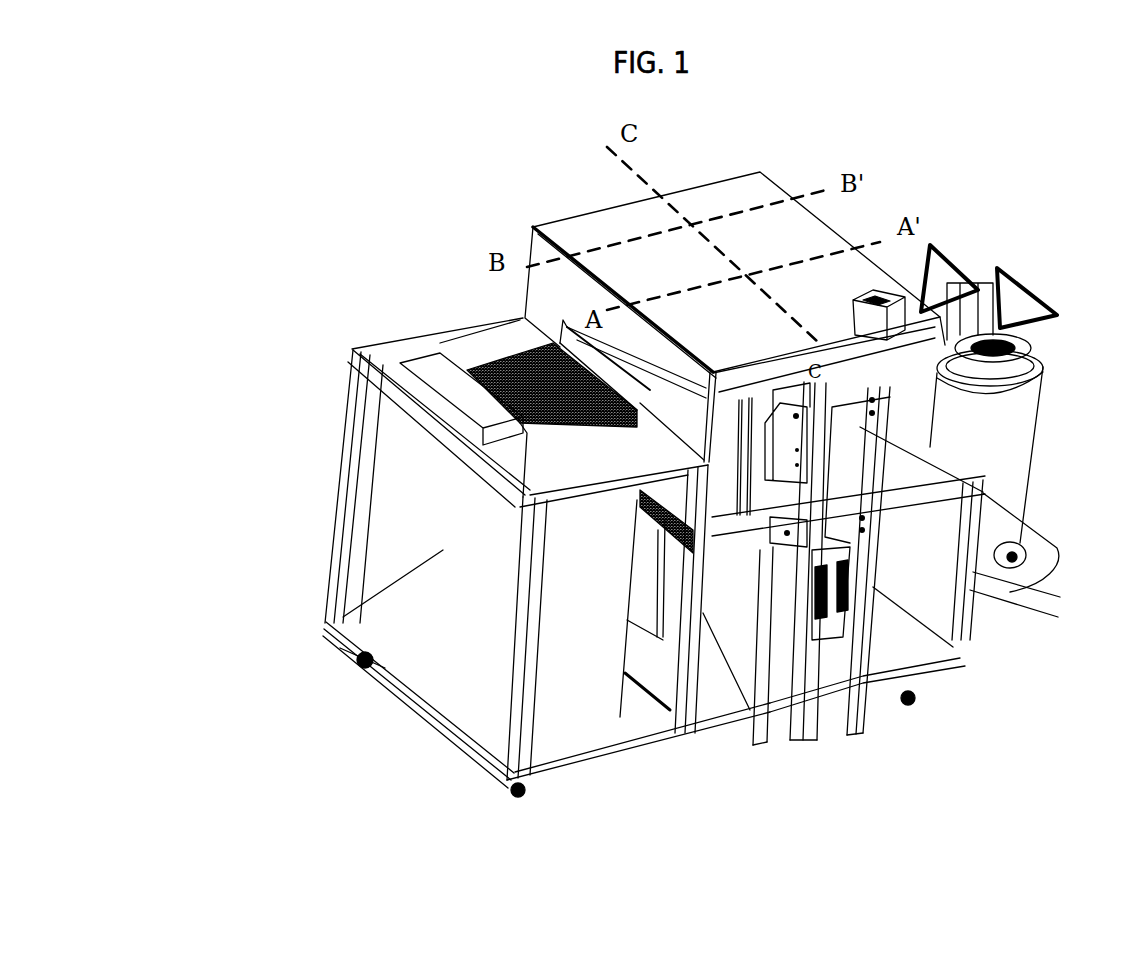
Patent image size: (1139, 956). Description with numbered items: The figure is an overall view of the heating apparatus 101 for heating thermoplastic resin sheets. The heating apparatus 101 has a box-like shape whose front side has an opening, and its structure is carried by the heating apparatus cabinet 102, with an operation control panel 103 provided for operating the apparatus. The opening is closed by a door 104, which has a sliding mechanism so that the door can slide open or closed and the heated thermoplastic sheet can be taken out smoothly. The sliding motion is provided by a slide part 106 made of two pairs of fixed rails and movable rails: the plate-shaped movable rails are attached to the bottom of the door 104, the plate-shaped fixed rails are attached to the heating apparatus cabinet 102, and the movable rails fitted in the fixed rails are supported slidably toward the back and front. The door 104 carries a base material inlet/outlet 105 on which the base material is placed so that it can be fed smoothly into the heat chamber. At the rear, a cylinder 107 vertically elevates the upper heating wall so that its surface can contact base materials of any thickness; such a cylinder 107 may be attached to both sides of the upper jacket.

The heating apparatus 101 is at (660, 222).
The heating apparatus cabinet 102 is at (718, 730).
The operation control panel 103 is at (383, 676).
The door 104 is at (350, 349).
The base material inlet/outlet 105 is at (440, 343).
The slide part 106 is at (517, 583).
The cylinder for elevating upper heating wall 107 is at (973, 548).